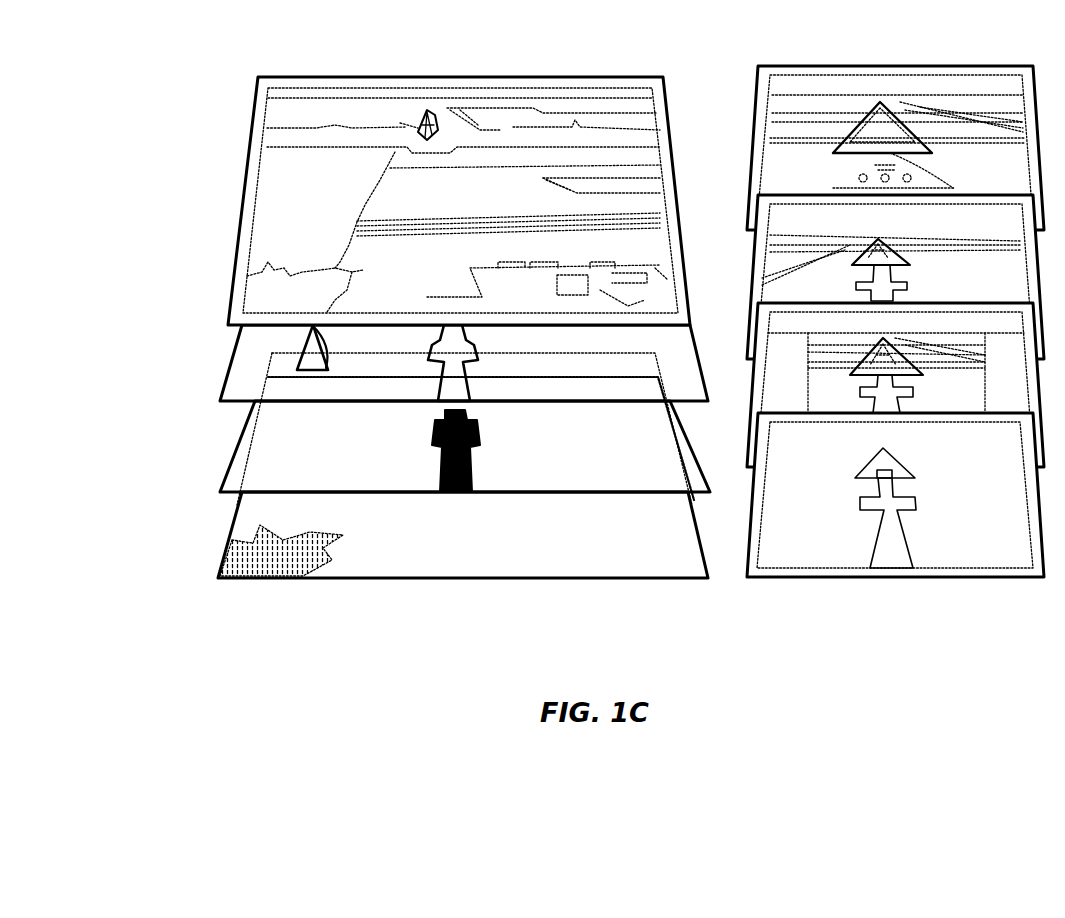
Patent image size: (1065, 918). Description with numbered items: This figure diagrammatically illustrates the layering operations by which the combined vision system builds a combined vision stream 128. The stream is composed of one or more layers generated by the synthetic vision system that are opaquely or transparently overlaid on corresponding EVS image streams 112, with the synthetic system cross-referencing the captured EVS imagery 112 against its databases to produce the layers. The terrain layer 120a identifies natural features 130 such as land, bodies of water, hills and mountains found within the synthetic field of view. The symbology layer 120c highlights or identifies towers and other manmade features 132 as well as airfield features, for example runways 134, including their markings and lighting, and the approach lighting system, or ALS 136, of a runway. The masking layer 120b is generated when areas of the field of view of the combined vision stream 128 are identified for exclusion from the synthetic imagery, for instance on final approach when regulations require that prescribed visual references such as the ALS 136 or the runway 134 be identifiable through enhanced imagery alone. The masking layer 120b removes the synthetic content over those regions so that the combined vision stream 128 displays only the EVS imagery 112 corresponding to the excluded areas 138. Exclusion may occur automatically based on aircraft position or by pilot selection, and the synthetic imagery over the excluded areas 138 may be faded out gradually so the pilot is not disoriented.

The combined vision stream 128 is at (139, 88).
The EVS image stream 112 is at (330, 76).
The terrain layer 120a is at (602, 583).
The masking layer 120b is at (230, 462).
The symbology layer 120c is at (220, 373).
The natural features 130 is at (271, 578).
The manmade features 132 is at (300, 348).
The runway 134 is at (425, 112).
The ALS 136 is at (432, 112).
The excluded areas 138 is at (458, 492).